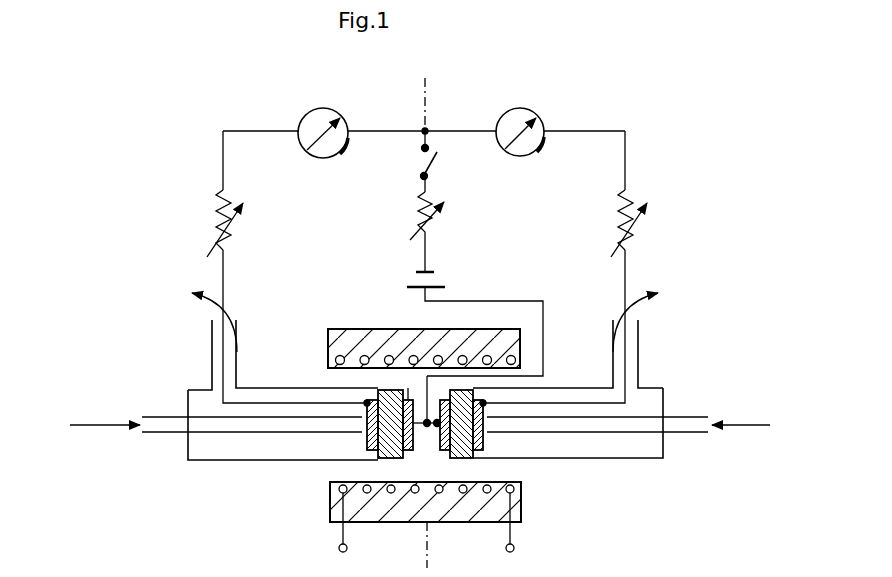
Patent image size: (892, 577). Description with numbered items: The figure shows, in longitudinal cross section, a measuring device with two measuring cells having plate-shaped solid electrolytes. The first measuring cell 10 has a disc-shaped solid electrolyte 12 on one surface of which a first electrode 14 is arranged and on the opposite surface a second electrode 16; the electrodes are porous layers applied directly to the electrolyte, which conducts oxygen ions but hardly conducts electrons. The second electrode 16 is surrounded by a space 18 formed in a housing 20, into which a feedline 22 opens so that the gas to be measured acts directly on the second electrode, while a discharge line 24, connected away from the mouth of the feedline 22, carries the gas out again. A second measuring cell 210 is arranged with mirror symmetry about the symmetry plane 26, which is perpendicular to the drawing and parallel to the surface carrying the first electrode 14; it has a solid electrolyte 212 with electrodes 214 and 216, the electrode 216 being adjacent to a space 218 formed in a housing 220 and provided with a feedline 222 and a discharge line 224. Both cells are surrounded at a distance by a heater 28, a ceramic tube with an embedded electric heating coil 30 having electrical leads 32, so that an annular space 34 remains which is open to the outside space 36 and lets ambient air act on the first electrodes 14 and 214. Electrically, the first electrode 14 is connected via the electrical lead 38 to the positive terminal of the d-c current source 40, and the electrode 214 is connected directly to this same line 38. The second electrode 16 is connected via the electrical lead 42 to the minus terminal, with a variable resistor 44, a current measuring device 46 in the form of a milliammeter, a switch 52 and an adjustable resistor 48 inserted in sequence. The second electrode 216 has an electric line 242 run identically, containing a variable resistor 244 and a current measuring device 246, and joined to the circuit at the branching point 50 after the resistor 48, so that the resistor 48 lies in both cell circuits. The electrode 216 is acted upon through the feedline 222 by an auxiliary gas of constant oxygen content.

The first measuring cell 10 is at (643, 470).
The solid electrolyte 12 is at (455, 458).
The first electrode 14 is at (426, 451).
The second electrode 16 is at (483, 441).
The space 18 is at (650, 438).
The housing 20 is at (662, 397).
The feedline 22 is at (686, 417).
The discharge line 24 is at (640, 332).
The symmetry plane 26 is at (428, 85).
The heater 28 is at (383, 522).
The electric heating coil 30 is at (342, 490).
The electrical leads 32 is at (337, 548).
The annular space 34 is at (420, 387).
The outside space 36 is at (530, 230).
The electrical lead 38 is at (545, 321).
The current source 40 is at (416, 283).
The electrical lead 42 is at (628, 270).
The variable resistor 44 is at (642, 232).
The current measuring device 46 is at (528, 108).
The adjustable resistor 48 is at (418, 200).
The branching point 50 is at (423, 128).
The switch 52 is at (424, 169).
The second measuring cell 210 is at (207, 467).
The solid electrolyte 212 is at (395, 458).
The first electrode 214 is at (408, 392).
The second electrode 216 is at (368, 434).
The space 218 is at (205, 444).
The housing 220 is at (204, 388).
The feedline 222 is at (163, 416).
The discharge line 224 is at (210, 325).
The electric line 242 is at (220, 272).
The variable resistor 244 is at (220, 196).
The current measuring device 246 is at (327, 108).